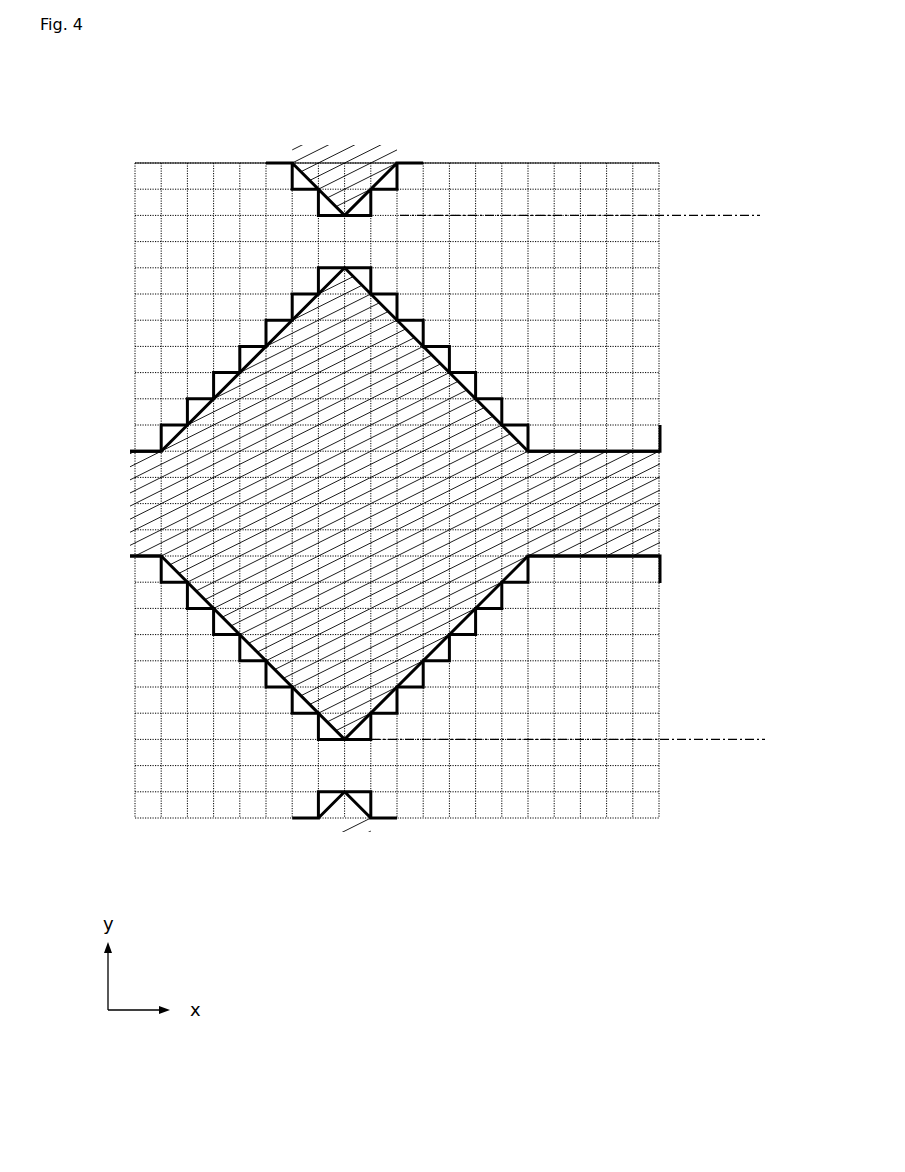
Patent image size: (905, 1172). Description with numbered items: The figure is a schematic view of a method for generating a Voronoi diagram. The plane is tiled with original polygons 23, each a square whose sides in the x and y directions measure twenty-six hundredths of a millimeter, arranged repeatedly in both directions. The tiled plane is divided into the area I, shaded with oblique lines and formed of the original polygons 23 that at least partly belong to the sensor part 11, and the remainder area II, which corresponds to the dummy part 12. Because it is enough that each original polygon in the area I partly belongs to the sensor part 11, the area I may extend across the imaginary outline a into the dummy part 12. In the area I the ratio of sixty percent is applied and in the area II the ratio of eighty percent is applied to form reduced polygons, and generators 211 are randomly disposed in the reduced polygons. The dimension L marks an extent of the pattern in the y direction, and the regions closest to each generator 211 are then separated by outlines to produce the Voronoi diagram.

The generator 211 is at (173, 191).
The original polygon 23 is at (542, 150).
The imaginary outline a is at (390, 294).
The dummy part 12 is at (115, 148).
The sensor part 11 is at (115, 455).
The area I is at (439, 575).
The area II is at (199, 715).
The length dimension L is at (733, 216).